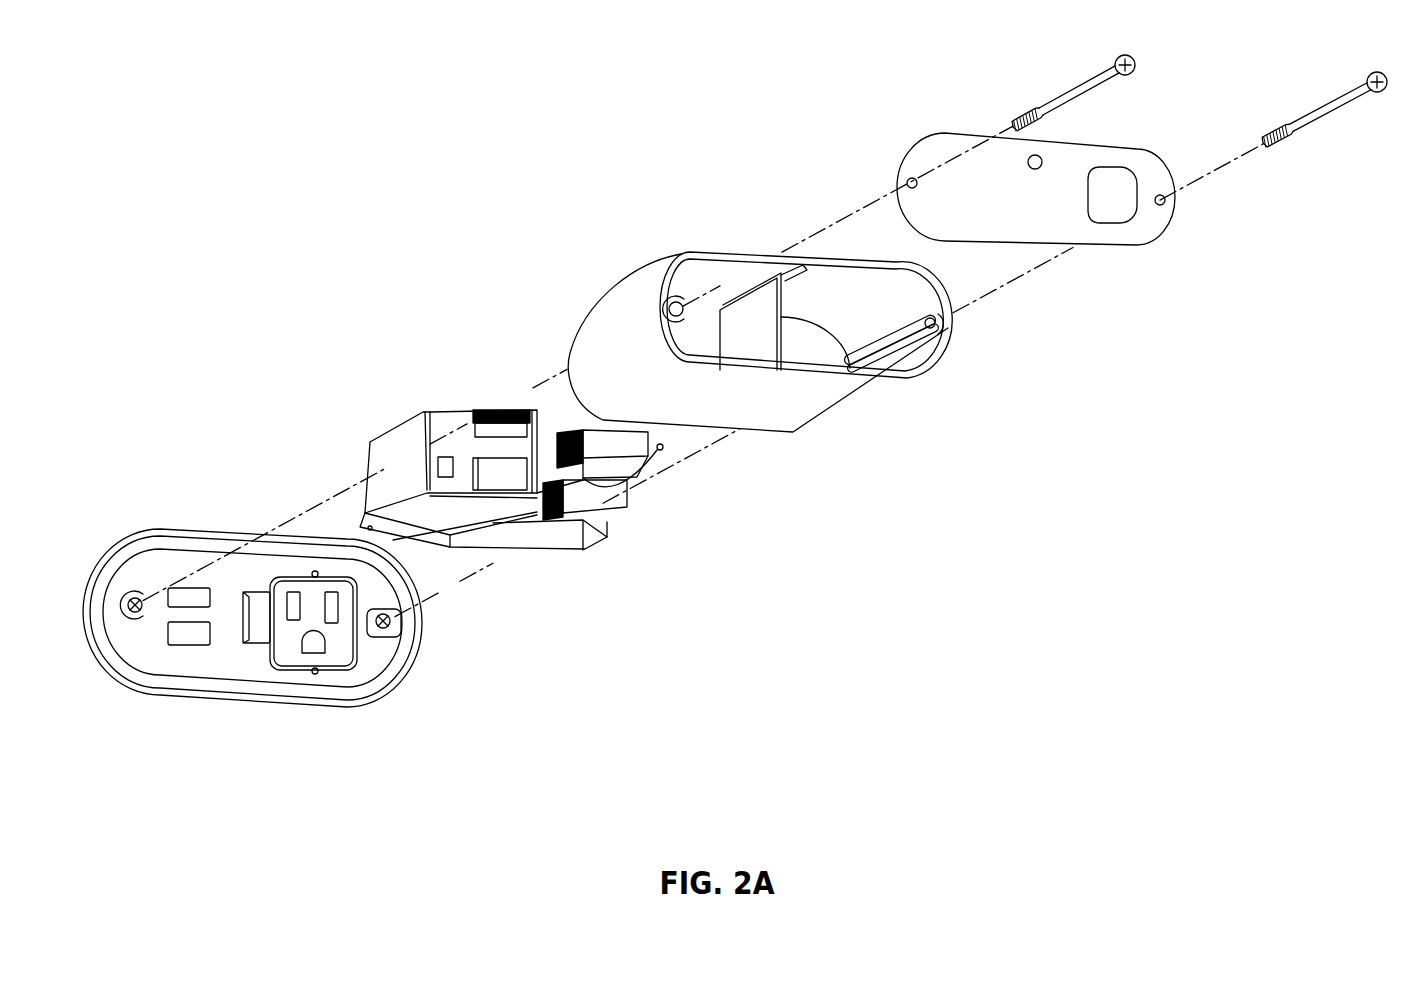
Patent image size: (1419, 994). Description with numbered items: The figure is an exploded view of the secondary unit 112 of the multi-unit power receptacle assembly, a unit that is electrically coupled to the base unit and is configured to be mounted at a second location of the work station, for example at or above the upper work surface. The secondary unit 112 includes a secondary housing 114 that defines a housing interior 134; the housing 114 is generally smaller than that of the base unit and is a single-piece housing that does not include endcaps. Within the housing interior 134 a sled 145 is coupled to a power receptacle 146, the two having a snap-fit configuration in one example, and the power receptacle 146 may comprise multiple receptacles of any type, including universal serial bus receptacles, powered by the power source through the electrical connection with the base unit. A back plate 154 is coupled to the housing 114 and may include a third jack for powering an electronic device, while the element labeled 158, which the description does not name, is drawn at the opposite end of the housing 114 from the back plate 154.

The secondary unit 112 is at (368, 112).
The secondary housing 114 is at (778, 415).
The housing interior 134 is at (850, 290).
The sled 145 is at (438, 533).
The power receptacle 146 is at (515, 405).
The back plate 154 is at (1125, 237).
The faceplate 158 is at (163, 567).